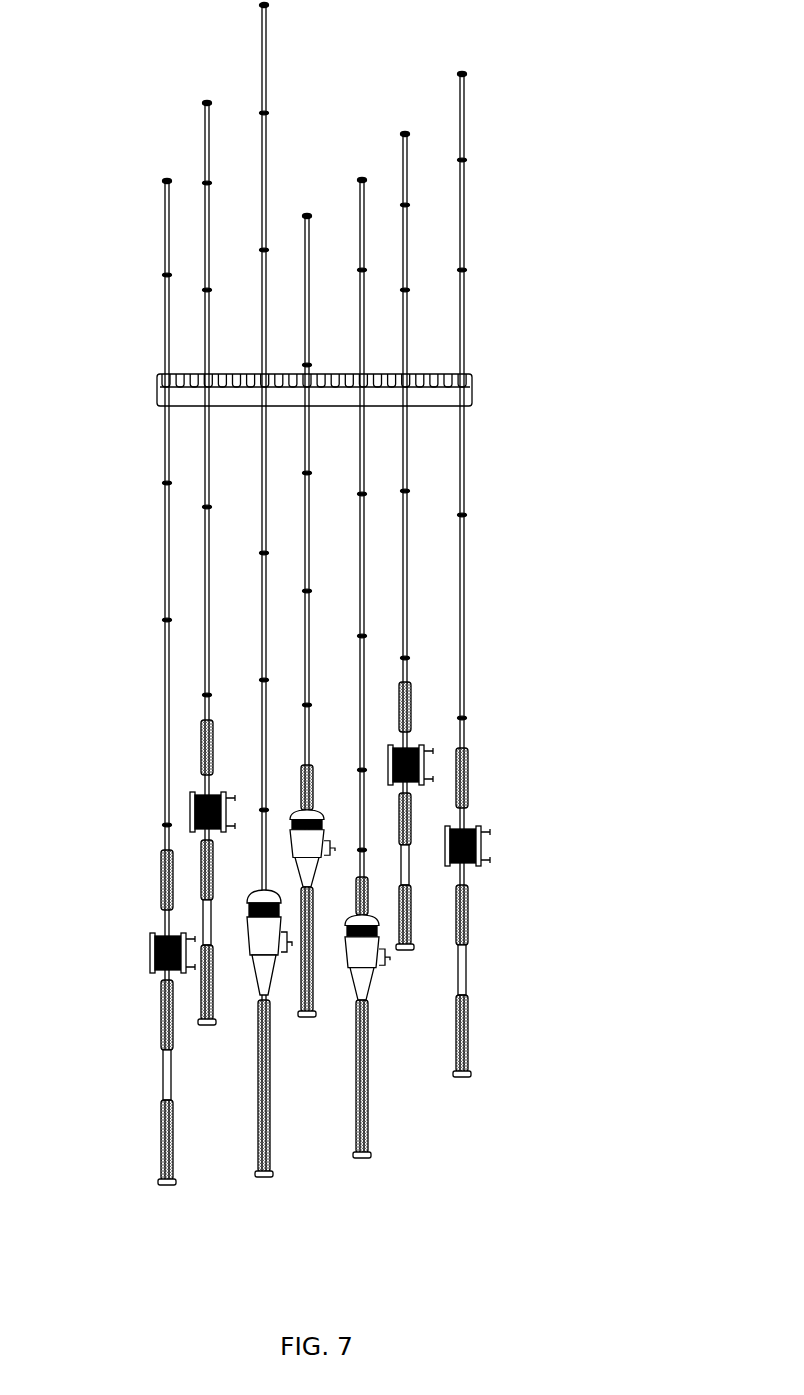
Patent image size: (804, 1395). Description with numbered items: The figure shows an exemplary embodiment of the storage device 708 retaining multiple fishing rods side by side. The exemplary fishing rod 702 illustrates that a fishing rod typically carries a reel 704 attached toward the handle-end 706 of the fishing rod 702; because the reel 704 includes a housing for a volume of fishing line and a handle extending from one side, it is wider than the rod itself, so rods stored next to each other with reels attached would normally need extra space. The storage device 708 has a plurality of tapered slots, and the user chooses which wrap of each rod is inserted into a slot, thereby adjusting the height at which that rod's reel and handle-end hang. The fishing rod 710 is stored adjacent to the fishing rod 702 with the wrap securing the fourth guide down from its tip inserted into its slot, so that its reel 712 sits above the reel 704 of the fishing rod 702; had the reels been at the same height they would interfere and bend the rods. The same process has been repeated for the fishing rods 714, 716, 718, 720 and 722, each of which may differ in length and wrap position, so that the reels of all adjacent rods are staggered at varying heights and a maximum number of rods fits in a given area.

The fishing rod 702 is at (120, 682).
The reel 704 is at (137, 953).
The handle-end 706 is at (138, 1120).
The storage device 708 is at (490, 381).
The fishing rod 710 is at (157, 563).
The reel 712 is at (187, 810).
The fishing rod 714 is at (250, 1150).
The fishing rod 716 is at (307, 1040).
The fishing rod 718 is at (383, 1130).
The fishing rod 720 is at (416, 684).
The fishing rod 722 is at (474, 905).